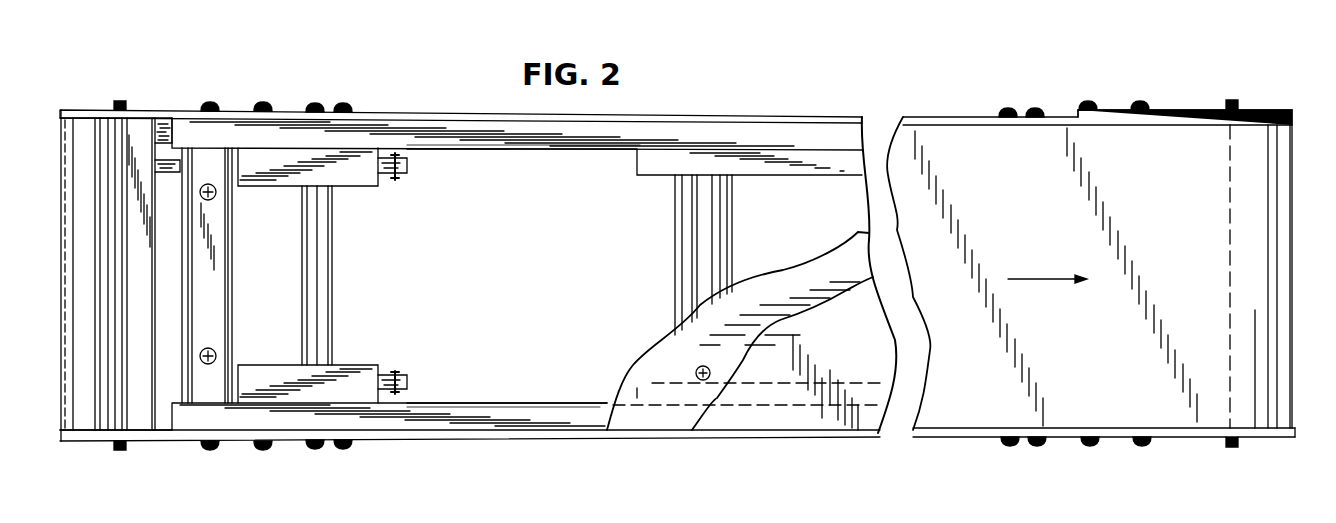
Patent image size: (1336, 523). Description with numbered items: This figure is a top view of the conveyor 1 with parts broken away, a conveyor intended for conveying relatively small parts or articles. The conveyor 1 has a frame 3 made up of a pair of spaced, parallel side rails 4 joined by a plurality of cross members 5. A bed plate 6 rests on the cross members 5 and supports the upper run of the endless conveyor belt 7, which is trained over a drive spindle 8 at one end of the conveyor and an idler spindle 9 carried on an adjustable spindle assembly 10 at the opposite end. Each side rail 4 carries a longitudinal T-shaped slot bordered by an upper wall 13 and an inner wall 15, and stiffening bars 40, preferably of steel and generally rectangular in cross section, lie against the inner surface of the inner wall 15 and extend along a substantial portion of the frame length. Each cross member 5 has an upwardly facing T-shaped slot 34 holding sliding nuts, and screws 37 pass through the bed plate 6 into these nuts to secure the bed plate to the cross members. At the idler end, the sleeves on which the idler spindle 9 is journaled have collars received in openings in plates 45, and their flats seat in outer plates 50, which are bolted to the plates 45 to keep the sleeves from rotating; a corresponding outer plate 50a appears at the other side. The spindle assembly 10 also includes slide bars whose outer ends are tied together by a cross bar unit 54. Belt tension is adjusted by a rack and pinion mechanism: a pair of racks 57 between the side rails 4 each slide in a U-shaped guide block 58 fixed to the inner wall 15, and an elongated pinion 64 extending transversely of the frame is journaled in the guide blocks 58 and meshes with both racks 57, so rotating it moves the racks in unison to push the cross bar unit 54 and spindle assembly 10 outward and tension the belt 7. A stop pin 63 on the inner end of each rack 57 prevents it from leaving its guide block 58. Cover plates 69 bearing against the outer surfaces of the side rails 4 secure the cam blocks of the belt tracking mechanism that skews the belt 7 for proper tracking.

The conveyor 1 is at (947, 113).
The frame 3 is at (820, 117).
The side rails 4 is at (755, 130).
The cross members 5 is at (222, 237).
The bed plate 6 is at (677, 367).
The conveyor belt 7 is at (62, 168).
The drive spindle 8 is at (1233, 191).
The idler spindle 9 is at (85, 137).
The spindle assembly 10 is at (147, 453).
The upper wall 13 is at (457, 138).
The inner wall 15 is at (523, 150).
The upper T-shaped slot 34 is at (705, 203).
The screws 37 is at (712, 372).
The stiffening bars 40 is at (647, 163).
The plate 45 is at (77, 115).
The outer plate 50 is at (173, 112).
The end block 50a is at (1190, 112).
The cross bar unit 54 is at (145, 283).
The racks 57 is at (398, 170).
The guide block 58 is at (356, 180).
The stop pin 63 is at (396, 173).
The pinion 64 is at (323, 281).
The cover plate 69 is at (352, 110).